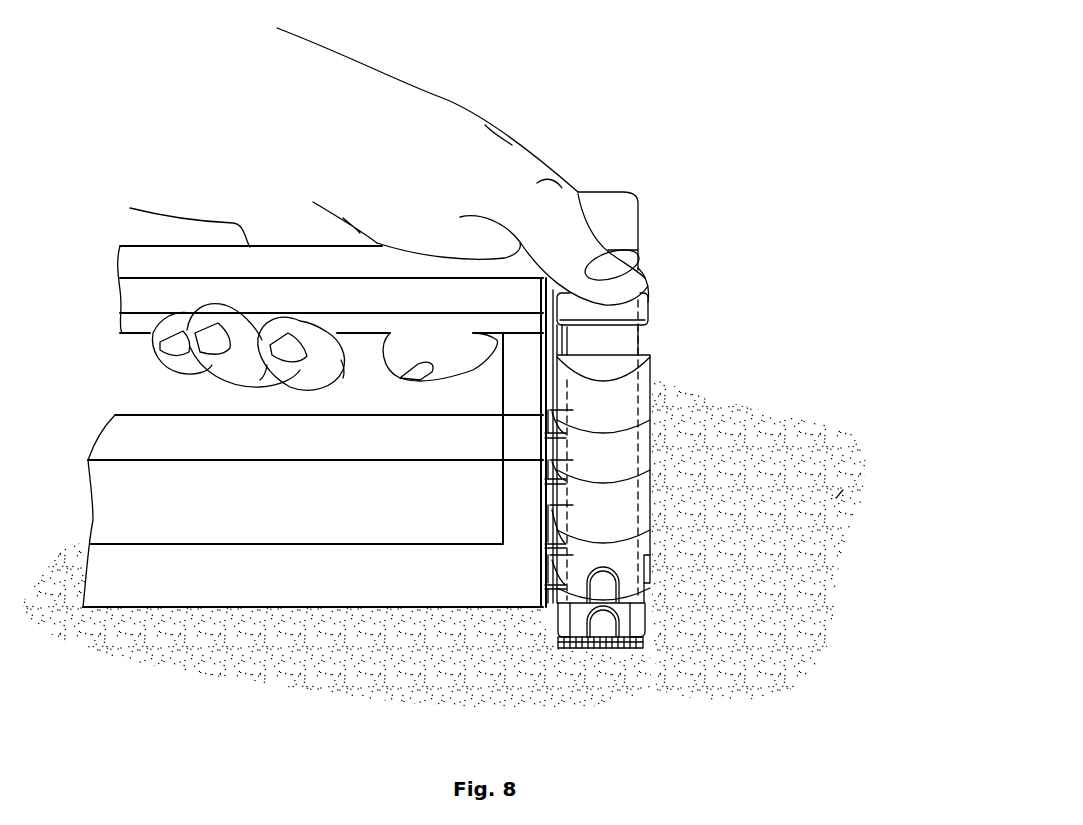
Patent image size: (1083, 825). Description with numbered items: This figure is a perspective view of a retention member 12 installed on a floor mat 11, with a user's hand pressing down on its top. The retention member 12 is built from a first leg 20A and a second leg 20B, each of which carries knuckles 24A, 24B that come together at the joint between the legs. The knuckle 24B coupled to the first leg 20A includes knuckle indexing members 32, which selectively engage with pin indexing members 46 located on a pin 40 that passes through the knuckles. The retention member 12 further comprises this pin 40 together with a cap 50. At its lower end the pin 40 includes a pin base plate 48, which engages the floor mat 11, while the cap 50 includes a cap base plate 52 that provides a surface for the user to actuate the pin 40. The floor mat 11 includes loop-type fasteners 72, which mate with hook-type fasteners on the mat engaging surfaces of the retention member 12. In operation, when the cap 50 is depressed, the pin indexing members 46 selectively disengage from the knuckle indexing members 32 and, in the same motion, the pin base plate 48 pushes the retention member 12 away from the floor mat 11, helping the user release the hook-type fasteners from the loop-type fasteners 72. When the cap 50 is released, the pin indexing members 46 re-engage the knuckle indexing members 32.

The floor mat 11 is at (807, 423).
The retention member 12 is at (716, 89).
The first leg 20A is at (146, 249).
The second leg 20B is at (623, 187).
The knuckle 24A is at (583, 410).
The knuckle 24B is at (573, 505).
The knuckle indexing members 32 is at (608, 588).
The pin 40 is at (632, 357).
The pin indexing members 46 is at (597, 618).
The pin base plate 48 is at (603, 648).
The cap 50 is at (638, 303).
The cap base plate 52 is at (641, 328).
The loop-type fasteners 72 is at (843, 490).